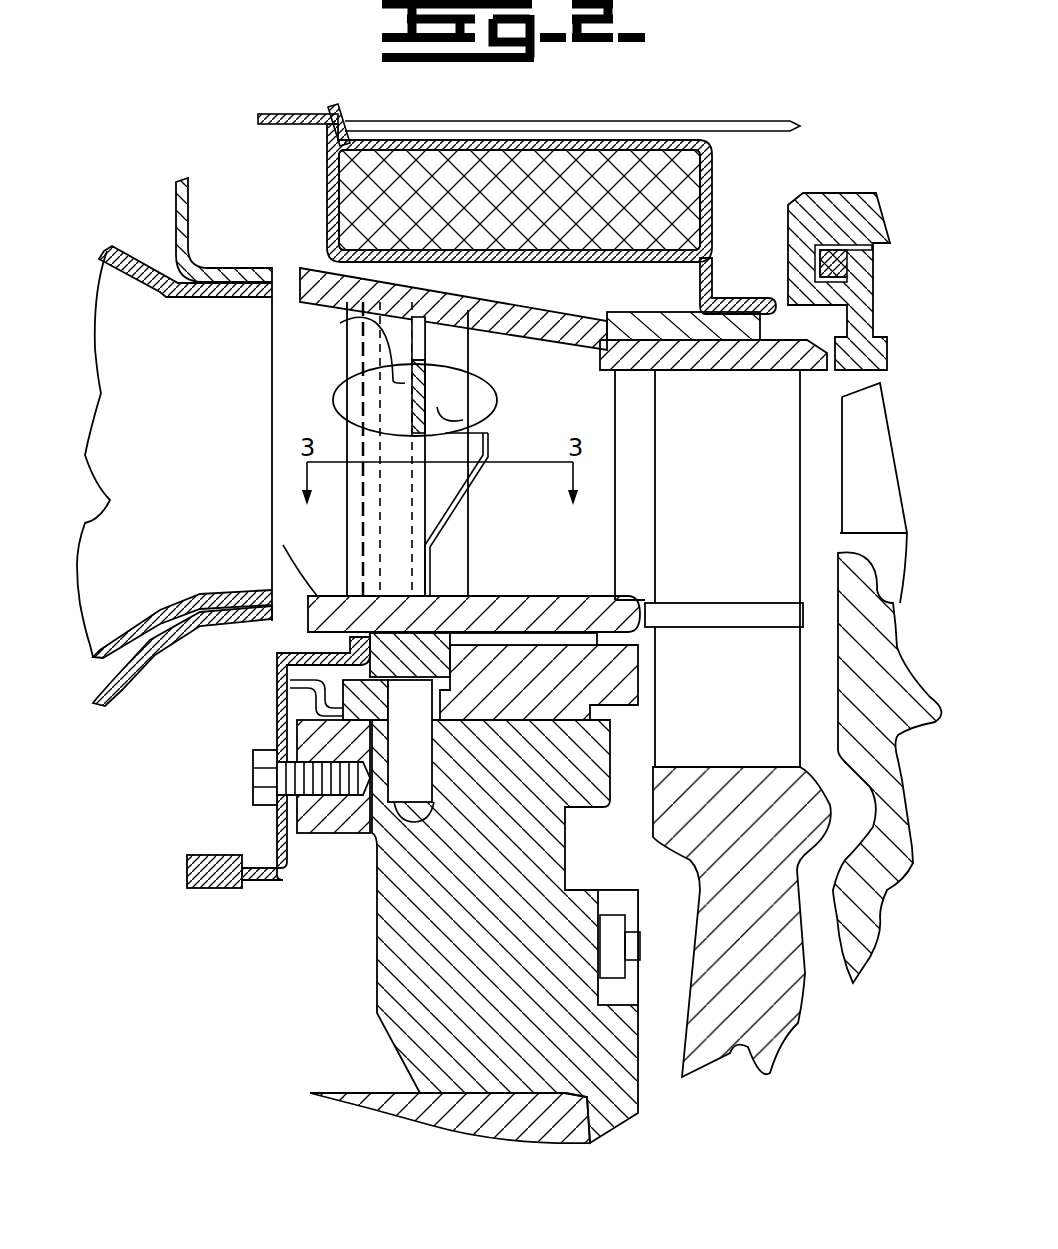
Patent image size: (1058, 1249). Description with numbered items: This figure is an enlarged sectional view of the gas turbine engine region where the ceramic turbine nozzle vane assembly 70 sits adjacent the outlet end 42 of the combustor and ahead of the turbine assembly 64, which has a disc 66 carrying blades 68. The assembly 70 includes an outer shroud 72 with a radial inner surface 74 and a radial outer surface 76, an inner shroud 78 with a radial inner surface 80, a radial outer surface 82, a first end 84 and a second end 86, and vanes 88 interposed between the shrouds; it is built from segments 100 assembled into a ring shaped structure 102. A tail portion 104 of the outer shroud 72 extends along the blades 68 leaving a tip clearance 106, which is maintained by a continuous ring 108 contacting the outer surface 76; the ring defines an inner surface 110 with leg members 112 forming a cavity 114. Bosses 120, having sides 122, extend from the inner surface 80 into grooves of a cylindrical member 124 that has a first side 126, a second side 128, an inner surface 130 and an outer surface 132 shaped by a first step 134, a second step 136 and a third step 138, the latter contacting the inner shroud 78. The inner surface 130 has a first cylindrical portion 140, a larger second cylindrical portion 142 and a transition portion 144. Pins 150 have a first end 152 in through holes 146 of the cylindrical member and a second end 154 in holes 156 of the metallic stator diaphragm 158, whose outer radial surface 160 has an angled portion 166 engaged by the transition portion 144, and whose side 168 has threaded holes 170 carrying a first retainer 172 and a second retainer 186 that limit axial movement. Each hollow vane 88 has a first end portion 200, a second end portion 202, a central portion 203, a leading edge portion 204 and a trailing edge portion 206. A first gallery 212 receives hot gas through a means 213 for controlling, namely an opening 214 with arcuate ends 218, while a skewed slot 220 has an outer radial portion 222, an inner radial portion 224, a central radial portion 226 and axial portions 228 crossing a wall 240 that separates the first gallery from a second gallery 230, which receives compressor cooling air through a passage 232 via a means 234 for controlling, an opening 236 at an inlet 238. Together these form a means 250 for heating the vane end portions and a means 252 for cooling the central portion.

The outlet end 42 is at (145, 463).
The turbine assembly 64 is at (808, 975).
The disc 66 is at (762, 870).
The blades 68 is at (777, 502).
The turbine nozzle vane assembly 70 is at (258, 228).
The outer shroud 72 is at (546, 335).
The radial inner surface 74 is at (504, 318).
The radial outer surface 76 is at (530, 313).
The inner shroud 78 is at (575, 597).
The radial inner surface 80 is at (493, 688).
The radial outer surface 82 is at (555, 597).
The first end 84 is at (272, 592).
The second end 86 is at (633, 627).
The vanes 88 is at (548, 468).
The segments 100 is at (783, 340).
The ring shaped structure 102 is at (312, 265).
The tail portion 104 is at (741, 353).
The tip clearance 106 is at (812, 367).
The continuous ring 108 is at (682, 345).
The inner surface 110 is at (664, 353).
The leg members 112 is at (757, 347).
The cavity 114 is at (690, 340).
The bosses 120 is at (278, 575).
The sides 122 is at (230, 635).
The cylindrical member 124 is at (590, 673).
The first side 126 is at (297, 736).
The second side 128 is at (640, 657).
The inner surface 130 is at (465, 725).
The outer surface 132 is at (600, 597).
The first step 134 is at (295, 684).
The second step 136 is at (487, 597).
The third step 138 is at (628, 597).
The first cylindrical portion 140 is at (358, 845).
The second cylindrical portion 142 is at (633, 732).
The transition portion 144 is at (560, 745).
The through holes 146 is at (300, 713).
The pins 150 is at (400, 793).
The first end 152 is at (285, 661).
The second end 154 is at (402, 782).
The holes 156 is at (400, 802).
The stator diaphragm 158 is at (492, 997).
The outer radial surface 160 is at (560, 723).
The angled portion 166 is at (613, 745).
The side 168 is at (260, 866).
The threaded holes 170 is at (340, 835).
The first retainer 172 is at (320, 698).
The second retainer 186 is at (253, 797).
The first end portion 200 is at (295, 305).
The second end portion 202 is at (330, 588).
The central portion 203 is at (615, 480).
The leading edge portion 204 is at (347, 355).
The trailing edge portion 206 is at (615, 448).
The first gallery 212 is at (393, 383).
The means for controlling the flow of mainstream hot gases 213 is at (288, 410).
The opening 214 is at (360, 385).
The arcuate end 218 is at (375, 555).
The slot 220 is at (463, 499).
The outer radial portion 222 is at (455, 350).
The inner radial portion 224 is at (427, 567).
The central radial portion 226 is at (470, 492).
The axial portions 228 is at (447, 515).
The second gallery 230 is at (478, 428).
The passage 232 is at (465, 212).
The means for controlling the flow of cooling air 234 is at (412, 272).
The opening 236 is at (430, 300).
The inlet 238 is at (447, 300).
The wall 240 is at (470, 393).
The means for heating 250 is at (235, 375).
The means for cooling 252 is at (264, 100).